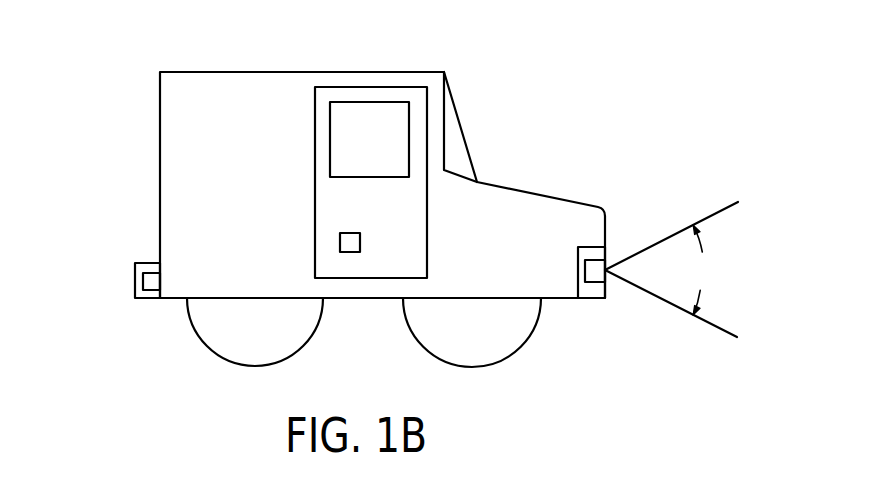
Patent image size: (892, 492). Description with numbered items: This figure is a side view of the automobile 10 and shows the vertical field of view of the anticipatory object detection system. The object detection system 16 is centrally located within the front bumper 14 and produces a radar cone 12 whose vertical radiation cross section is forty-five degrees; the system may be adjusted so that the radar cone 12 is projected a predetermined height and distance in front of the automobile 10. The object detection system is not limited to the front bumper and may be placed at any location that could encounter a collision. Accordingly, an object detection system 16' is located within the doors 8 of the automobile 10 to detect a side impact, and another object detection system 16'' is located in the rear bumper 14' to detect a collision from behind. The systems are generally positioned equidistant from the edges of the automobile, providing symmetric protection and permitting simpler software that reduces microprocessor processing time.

The automobile 10 is at (290, 72).
The doors 8 is at (315, 202).
The object detection system 16' is at (371, 223).
The rear bumper 14' is at (132, 251).
The object detection system 16'' is at (186, 260).
The bumper 14 is at (582, 305).
The object detection system 16 is at (568, 255).
The radar cone 12 is at (718, 207).